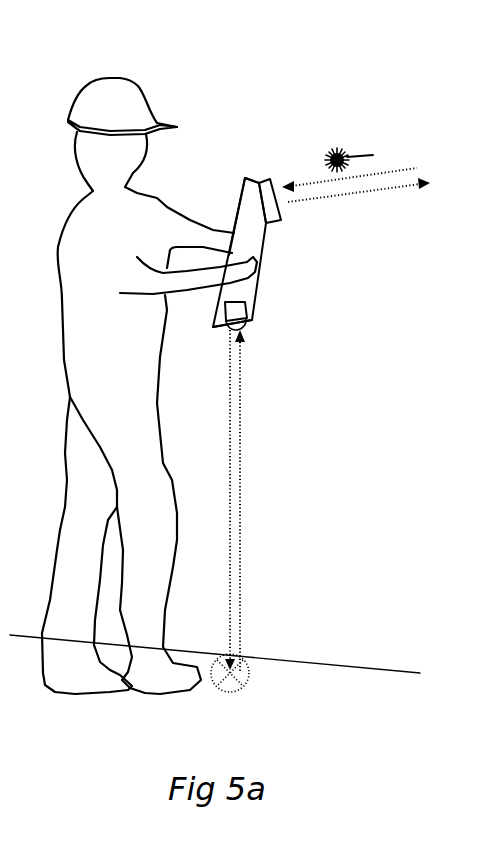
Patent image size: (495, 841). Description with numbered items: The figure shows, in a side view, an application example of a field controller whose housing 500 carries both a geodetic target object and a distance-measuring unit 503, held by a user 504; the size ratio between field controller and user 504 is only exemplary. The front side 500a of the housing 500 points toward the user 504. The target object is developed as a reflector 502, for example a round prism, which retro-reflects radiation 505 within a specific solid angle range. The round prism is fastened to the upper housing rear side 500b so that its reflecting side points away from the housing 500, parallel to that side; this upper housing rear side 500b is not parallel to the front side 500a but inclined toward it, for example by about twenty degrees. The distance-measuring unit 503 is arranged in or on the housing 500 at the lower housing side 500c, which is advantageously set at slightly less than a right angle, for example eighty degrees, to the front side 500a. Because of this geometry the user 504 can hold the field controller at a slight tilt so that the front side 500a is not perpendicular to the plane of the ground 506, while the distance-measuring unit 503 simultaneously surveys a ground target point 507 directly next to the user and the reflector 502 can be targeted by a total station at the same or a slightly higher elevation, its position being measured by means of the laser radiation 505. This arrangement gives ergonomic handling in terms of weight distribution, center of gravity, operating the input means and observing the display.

The housing 500 is at (253, 252).
The front side 500a is at (235, 212).
The upper housing rear side 500b is at (255, 182).
The lower housing side 500c is at (223, 323).
The reflector 502 is at (268, 193).
The distance-measuring unit 503 is at (250, 322).
The user 504 is at (94, 147).
The laser radiation 505 is at (383, 165).
The ground 506 is at (343, 680).
The ground target point 507 is at (245, 673).